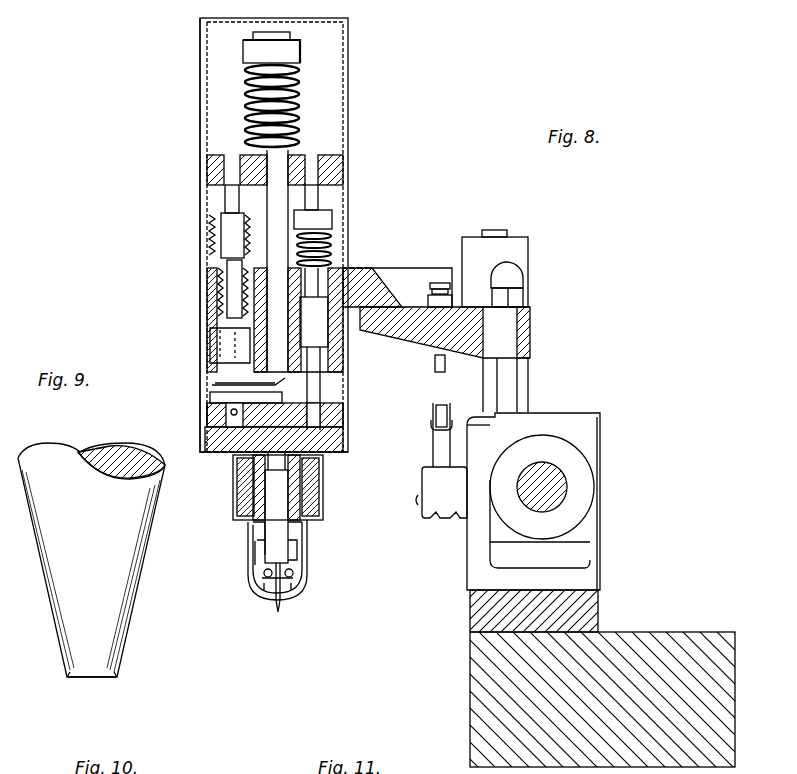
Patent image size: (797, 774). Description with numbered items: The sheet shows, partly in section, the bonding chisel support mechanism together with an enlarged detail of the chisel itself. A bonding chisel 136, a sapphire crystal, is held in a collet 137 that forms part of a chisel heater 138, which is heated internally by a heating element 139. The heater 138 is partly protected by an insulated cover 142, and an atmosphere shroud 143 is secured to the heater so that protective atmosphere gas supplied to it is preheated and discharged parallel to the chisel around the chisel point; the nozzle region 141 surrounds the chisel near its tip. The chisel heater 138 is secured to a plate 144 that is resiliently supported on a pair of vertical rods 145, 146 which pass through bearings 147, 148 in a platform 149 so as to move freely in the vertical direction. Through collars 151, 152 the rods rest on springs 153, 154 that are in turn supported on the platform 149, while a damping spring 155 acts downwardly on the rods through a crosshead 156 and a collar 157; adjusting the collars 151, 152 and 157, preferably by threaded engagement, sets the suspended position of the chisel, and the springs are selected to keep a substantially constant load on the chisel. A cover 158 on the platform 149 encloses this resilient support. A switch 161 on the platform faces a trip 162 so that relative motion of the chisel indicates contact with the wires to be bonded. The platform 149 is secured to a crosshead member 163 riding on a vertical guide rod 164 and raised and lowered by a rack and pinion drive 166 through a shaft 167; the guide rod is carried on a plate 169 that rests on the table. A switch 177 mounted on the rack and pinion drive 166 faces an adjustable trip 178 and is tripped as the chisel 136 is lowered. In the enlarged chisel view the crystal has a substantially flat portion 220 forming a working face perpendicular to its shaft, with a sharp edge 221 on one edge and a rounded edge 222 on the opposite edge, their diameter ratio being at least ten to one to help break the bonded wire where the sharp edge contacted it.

In FIG. 8, the bonding chisel 136 is at (280, 600).
In FIG. 9, the bonding chisel 136 is at (133, 595).
In FIG. 8, the collet 137 is at (298, 584).
In FIG. 8, the chisel heater 138 is at (300, 550).
In FIG. 8, the heating element 139 is at (285, 500).
In FIG. 8, the nozzle 141 is at (307, 533).
In FIG. 8, the insulated cover 142 is at (233, 483).
In FIG. 8, the atmosphere shroud 143 is at (250, 548).
In FIG. 8, the plate 144 is at (344, 430).
In FIG. 8, the vertical rod 145 is at (224, 198).
In FIG. 8, the vertical rod 146 is at (330, 198).
In FIG. 8, the bearing 147 is at (217, 298).
In FIG. 8, the bearing 148 is at (330, 332).
In FIG. 8, the platform 149 is at (398, 268).
In FIG. 8, the collar 151 is at (216, 224).
In FIG. 8, the collar 152 is at (333, 215).
In FIG. 8, the spring 153 is at (212, 255).
In FIG. 8, the spring 154 is at (334, 240).
In FIG. 8, the damping spring 155 is at (298, 100).
In FIG. 8, the crosshead 156 is at (333, 162).
In FIG. 8, the collar 157 is at (296, 53).
In FIG. 8, the cover 158 is at (347, 90).
In FIG. 8, the switch 161 is at (212, 350).
In FIG. 8, the trip 162 is at (214, 384).
In FIG. 8, the crosshead member 163 is at (530, 318).
In FIG. 8, the vertical guide rod 164 is at (505, 237).
In FIG. 8, the rack and pinion drive 166 is at (592, 433).
In FIG. 8, the shaft 167 is at (568, 487).
In FIG. 8, the plate 169 is at (665, 632).
In FIG. 8, the switch 177 is at (452, 500).
In FIG. 8, the adjustable trip 178 is at (435, 360).
In FIG. 9, the flat portion 220 is at (92, 684).
In FIG. 9, the sharp edge 221 is at (67, 677).
In FIG. 9, the rounded edge 222 is at (117, 677).